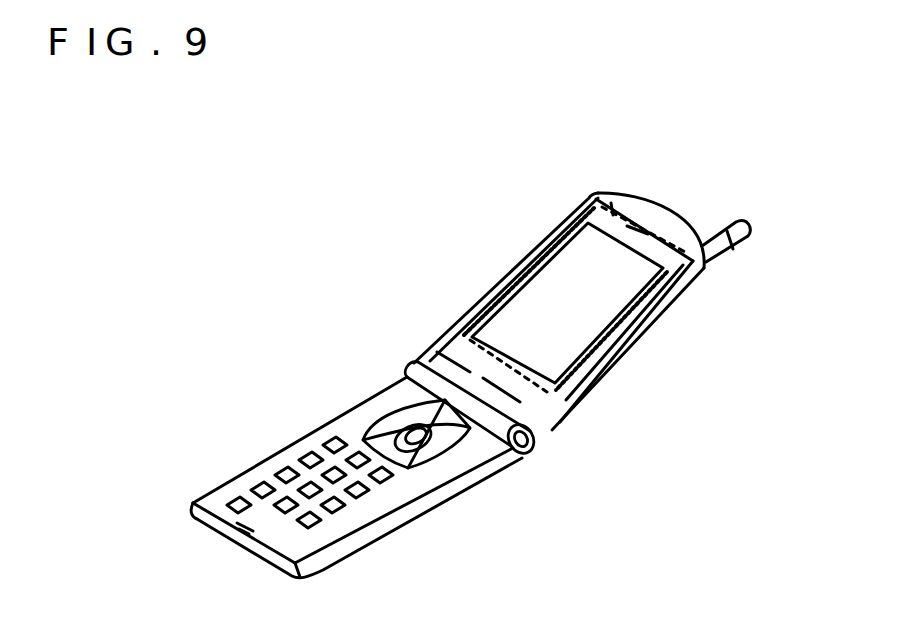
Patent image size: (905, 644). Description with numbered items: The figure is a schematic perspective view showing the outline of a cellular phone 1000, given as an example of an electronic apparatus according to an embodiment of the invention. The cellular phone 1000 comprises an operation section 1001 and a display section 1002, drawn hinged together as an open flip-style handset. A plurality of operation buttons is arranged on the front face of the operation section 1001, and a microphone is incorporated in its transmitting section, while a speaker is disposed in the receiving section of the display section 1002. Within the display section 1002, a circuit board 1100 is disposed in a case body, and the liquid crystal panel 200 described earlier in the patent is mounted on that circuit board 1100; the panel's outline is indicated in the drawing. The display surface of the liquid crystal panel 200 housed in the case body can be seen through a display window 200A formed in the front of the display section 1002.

The cellular phone 1000 is at (203, 206).
The operation section 1001 is at (275, 455).
The display section 1002 is at (636, 339).
The circuit board 1100 is at (690, 218).
The liquid crystal panel 200 is at (603, 192).
The display window 200A is at (541, 308).